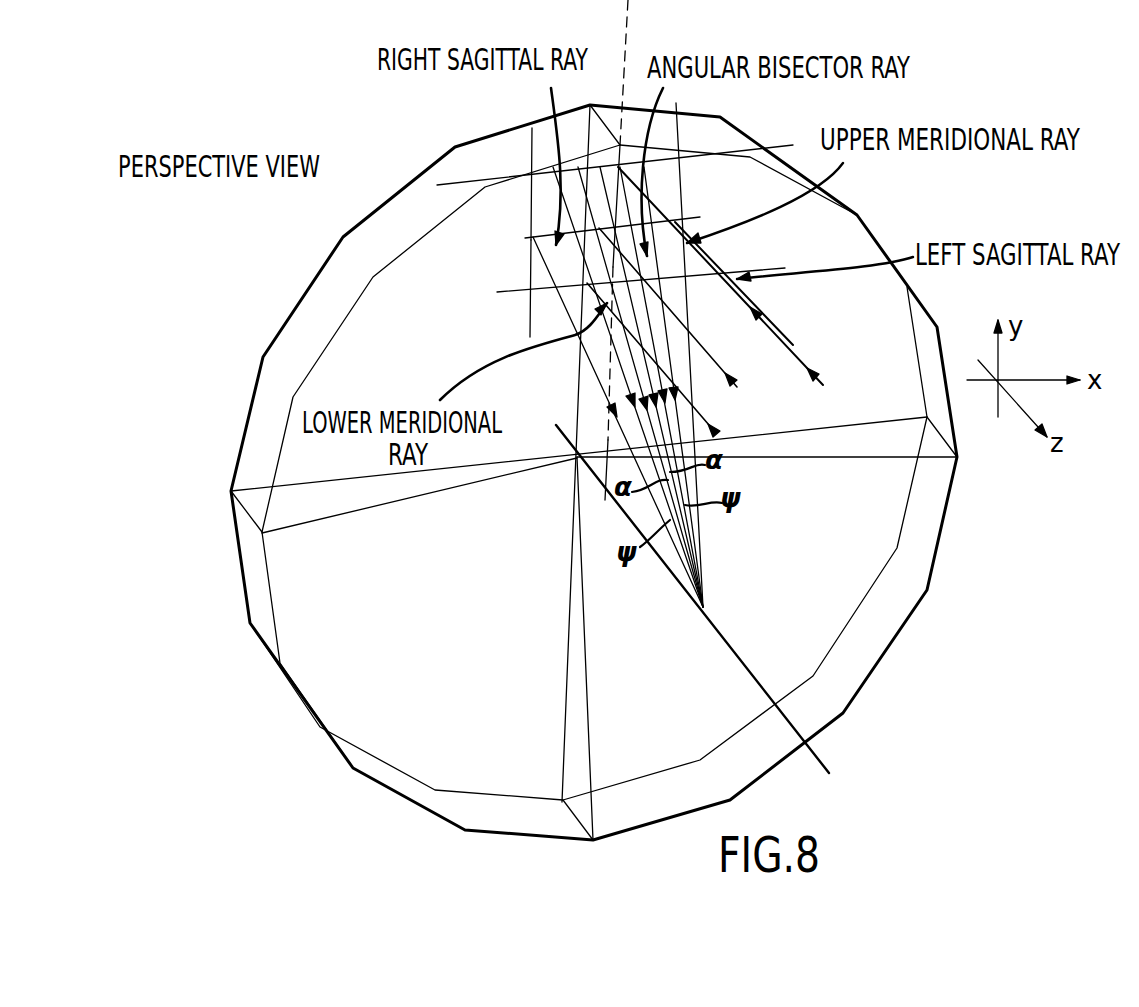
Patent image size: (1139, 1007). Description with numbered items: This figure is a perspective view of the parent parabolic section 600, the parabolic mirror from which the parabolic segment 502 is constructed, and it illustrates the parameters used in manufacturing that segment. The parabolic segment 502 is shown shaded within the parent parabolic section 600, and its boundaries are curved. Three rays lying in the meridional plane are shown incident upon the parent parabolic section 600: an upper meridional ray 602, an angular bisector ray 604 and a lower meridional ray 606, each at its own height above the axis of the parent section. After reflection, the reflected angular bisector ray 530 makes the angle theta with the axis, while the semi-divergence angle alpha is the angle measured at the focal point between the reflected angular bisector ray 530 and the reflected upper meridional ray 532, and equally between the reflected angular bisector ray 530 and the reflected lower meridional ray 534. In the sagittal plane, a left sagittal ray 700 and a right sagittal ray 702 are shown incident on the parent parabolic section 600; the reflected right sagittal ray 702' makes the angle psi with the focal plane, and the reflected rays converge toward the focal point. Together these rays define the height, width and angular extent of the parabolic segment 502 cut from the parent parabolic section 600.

The parent parabolic section 600 is at (851, 231).
The parabolic segment 502 is at (677, 168).
The left sagittal ray 700 is at (710, 260).
The upper meridional ray 602 is at (762, 342).
The angular bisector ray 604 is at (737, 387).
The lower meridional ray 606 is at (712, 430).
The reflected upper meridional ray 532 is at (578, 333).
The right sagittal ray 702 is at (505, 182).
The reflected right sagittal ray 702' is at (506, 290).
The reflected lower meridional ray 534 is at (613, 355).
The reflected angular bisector ray 530 is at (643, 388).